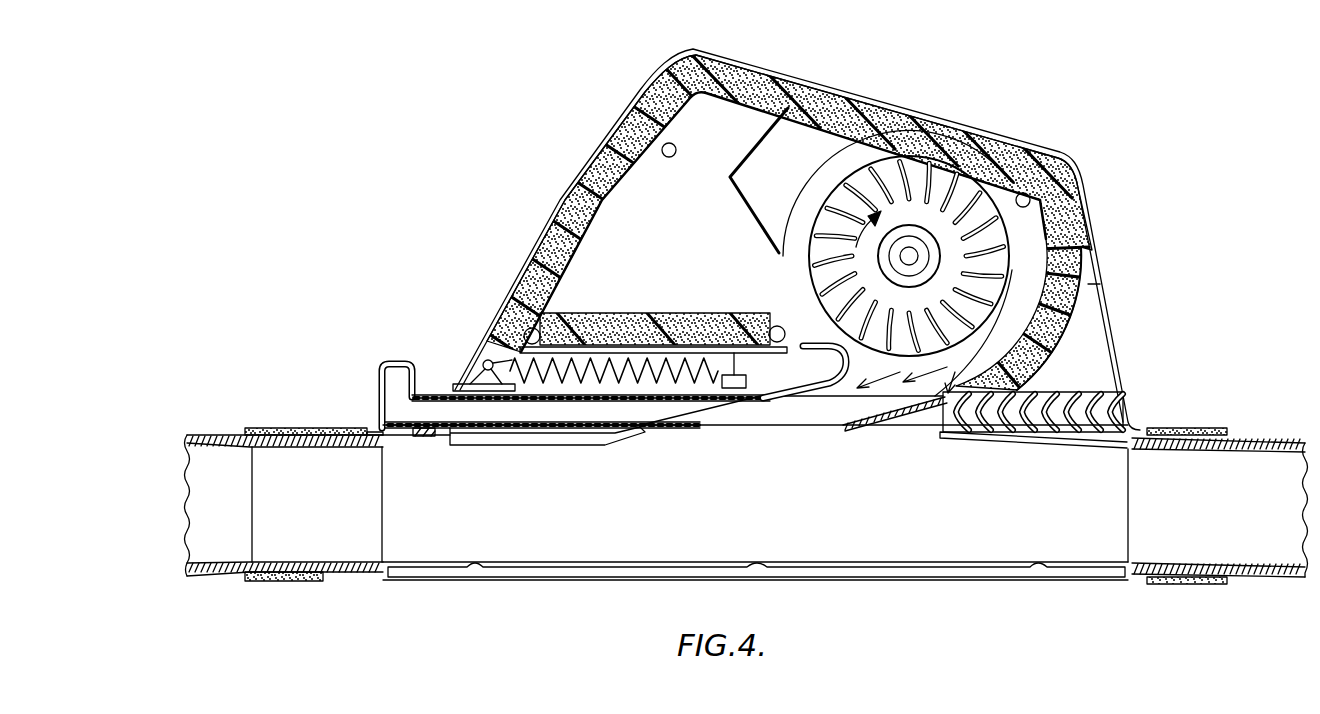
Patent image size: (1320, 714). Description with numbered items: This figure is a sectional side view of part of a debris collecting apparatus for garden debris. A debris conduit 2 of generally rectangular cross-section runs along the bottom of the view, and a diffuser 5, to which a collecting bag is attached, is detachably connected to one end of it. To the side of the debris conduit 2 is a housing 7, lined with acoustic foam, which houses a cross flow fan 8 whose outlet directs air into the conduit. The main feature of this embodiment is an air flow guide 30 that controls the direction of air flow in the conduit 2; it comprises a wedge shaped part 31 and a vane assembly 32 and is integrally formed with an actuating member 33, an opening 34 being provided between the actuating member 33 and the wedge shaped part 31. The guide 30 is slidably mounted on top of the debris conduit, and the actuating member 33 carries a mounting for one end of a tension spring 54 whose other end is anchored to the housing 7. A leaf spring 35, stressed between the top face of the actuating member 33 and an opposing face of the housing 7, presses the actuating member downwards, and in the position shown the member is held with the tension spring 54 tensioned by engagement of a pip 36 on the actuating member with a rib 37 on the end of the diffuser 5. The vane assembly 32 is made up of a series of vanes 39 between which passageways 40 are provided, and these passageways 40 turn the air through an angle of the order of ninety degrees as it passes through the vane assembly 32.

The debris conduit 2 is at (910, 562).
The diffuser 5 is at (238, 577).
The housing 7 is at (983, 127).
The cross flow fan 8 is at (812, 293).
The air flow guide 30 is at (917, 368).
The wedge shaped part 31 is at (907, 430).
The vane assembly 32 is at (1060, 395).
The actuating member 33 is at (430, 392).
The opening 34 is at (803, 415).
The leaf spring 35 is at (484, 386).
The pip 36 is at (440, 436).
The rib 37 is at (418, 438).
The vanes 39 is at (1043, 425).
The passageways 40 is at (962, 432).
The tension spring 54 is at (608, 377).